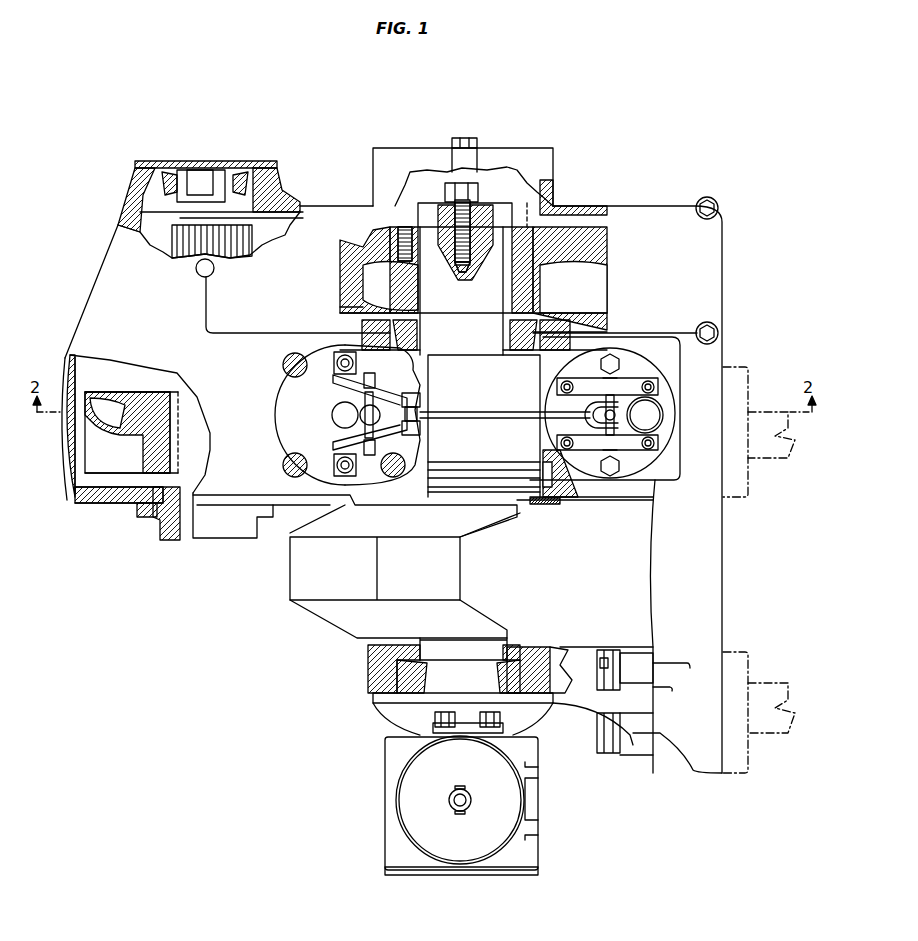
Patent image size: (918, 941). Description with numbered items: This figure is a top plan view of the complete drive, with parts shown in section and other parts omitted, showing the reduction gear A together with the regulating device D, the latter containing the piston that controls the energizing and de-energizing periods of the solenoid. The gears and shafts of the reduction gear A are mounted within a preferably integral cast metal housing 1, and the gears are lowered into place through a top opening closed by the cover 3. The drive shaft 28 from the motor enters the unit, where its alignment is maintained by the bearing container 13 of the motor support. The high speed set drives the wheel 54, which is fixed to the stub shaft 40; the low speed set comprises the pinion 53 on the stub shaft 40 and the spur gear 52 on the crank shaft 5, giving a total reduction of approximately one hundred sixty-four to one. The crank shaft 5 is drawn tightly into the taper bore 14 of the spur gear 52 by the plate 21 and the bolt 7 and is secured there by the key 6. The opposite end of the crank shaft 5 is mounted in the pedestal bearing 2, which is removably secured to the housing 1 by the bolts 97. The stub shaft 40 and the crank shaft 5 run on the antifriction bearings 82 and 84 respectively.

The housing 1 is at (120, 212).
The antifriction bearing 82 is at (262, 192).
The pinion 53 is at (178, 240).
The reduction gear A is at (147, 267).
The wheel 54 is at (133, 430).
The stub shaft 40 is at (175, 541).
The bearing container 13 is at (275, 418).
The drive shaft 28 is at (338, 408).
The plate 21 is at (528, 202).
The bolt 7 is at (440, 200).
The cover 3 is at (607, 212).
The key 6 is at (522, 275).
The taper bore 14 is at (418, 275).
The spur gear 52 is at (560, 268).
The antifriction bearing 84 is at (500, 350).
The crank shaft 5 is at (292, 578).
The pedestal bearing 2 is at (362, 676).
The bolts 97 is at (600, 757).
The regulating device D is at (572, 831).